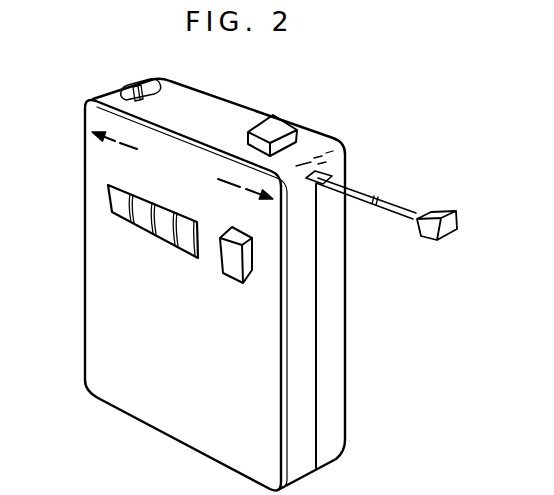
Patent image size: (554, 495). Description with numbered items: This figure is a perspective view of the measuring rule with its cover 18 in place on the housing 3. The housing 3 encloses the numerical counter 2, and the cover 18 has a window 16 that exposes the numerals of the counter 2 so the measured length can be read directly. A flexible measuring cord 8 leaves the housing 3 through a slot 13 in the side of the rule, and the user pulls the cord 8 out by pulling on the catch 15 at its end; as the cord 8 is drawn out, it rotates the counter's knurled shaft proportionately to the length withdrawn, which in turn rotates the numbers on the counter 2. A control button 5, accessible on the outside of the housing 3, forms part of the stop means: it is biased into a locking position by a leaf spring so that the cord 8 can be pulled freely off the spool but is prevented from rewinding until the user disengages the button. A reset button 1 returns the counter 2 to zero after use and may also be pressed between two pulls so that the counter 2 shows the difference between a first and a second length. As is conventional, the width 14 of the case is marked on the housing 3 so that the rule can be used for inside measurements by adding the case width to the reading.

The reset button 1 is at (244, 281).
The numerical counter 2 is at (110, 199).
The housing 3 is at (218, 100).
The control button 5 is at (297, 126).
The flexible measuring cord 8 is at (387, 197).
The slot 13 is at (345, 168).
The width 14 is at (115, 135).
The catch 15 is at (455, 231).
The window 16 is at (124, 224).
The cover 18 is at (187, 446).